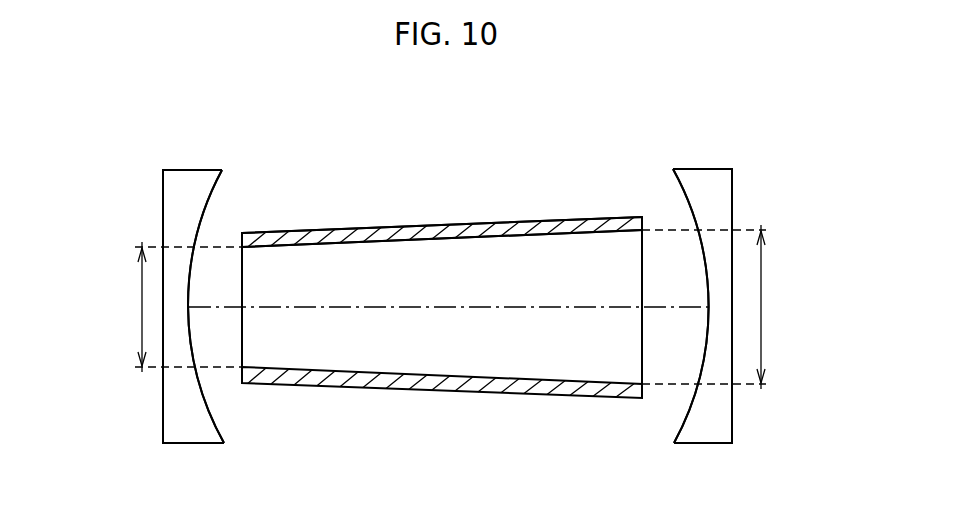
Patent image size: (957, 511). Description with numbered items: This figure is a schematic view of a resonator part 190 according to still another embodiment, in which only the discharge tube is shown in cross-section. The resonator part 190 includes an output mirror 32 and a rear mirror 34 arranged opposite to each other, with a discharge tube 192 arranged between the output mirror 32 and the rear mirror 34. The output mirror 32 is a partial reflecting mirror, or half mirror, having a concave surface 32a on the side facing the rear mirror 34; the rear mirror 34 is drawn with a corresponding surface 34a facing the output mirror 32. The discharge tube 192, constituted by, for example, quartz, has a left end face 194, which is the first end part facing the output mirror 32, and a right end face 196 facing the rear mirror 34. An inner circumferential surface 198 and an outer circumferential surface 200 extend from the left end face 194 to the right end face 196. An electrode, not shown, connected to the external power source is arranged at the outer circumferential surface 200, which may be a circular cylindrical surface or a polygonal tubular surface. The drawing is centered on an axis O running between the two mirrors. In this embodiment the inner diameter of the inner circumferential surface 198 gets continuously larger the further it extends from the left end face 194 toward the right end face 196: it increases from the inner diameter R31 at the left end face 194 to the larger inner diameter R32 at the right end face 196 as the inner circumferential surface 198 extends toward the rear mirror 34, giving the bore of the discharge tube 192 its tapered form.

The output mirror 32 is at (188, 178).
The concave surface 32a is at (209, 200).
The rear mirror 34 is at (707, 178).
The reflecting surface of second mirror 34a is at (684, 195).
The resonator part 190 is at (624, 103).
The discharge tube 192 is at (537, 218).
The left end face 194 is at (241, 343).
The right end face 196 is at (643, 353).
The inner circumferential surface 198 is at (447, 241).
The outer circumferential surface 200 is at (373, 227).
The optical axis O is at (668, 308).
The inner diameter at the left end face R31 is at (172, 307).
The inner diameter at the right end face R32 is at (721, 307).